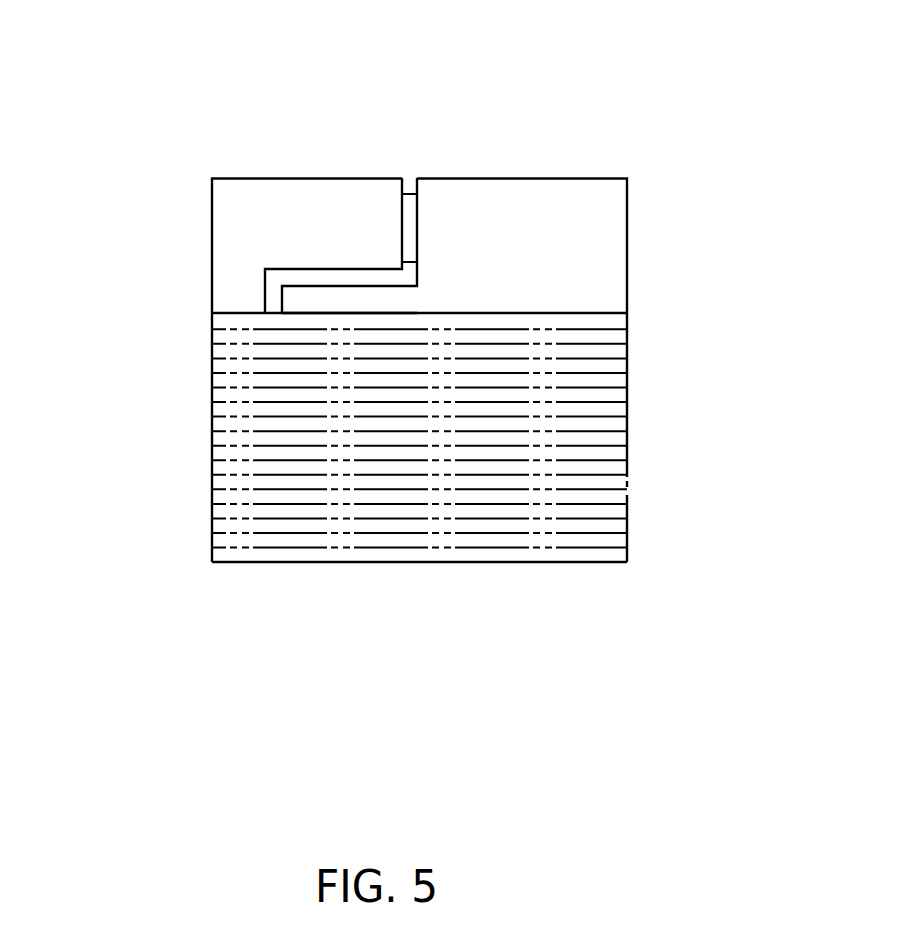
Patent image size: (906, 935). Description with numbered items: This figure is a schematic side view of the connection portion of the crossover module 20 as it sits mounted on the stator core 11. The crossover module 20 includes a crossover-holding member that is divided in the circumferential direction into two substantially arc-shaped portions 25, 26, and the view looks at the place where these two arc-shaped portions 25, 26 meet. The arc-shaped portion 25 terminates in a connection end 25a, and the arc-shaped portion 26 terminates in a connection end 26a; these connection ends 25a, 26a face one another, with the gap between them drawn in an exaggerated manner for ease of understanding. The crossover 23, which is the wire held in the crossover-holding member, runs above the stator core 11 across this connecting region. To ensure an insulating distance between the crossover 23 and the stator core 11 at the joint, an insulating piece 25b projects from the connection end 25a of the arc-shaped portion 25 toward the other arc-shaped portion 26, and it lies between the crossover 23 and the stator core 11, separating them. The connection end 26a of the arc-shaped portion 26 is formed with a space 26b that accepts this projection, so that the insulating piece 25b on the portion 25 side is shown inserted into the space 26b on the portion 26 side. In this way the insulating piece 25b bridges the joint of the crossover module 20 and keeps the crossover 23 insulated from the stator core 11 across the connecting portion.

The crossover module 20 is at (569, 177).
The stator core 11 is at (627, 468).
The crossover 23 is at (410, 203).
The arc-shaped portion 25 is at (588, 241).
The connection end 25a is at (414, 179).
The insulating piece 25b is at (305, 300).
The arc-shaped portion 26 is at (236, 223).
The connection end 26a is at (405, 179).
The space 26b is at (310, 278).